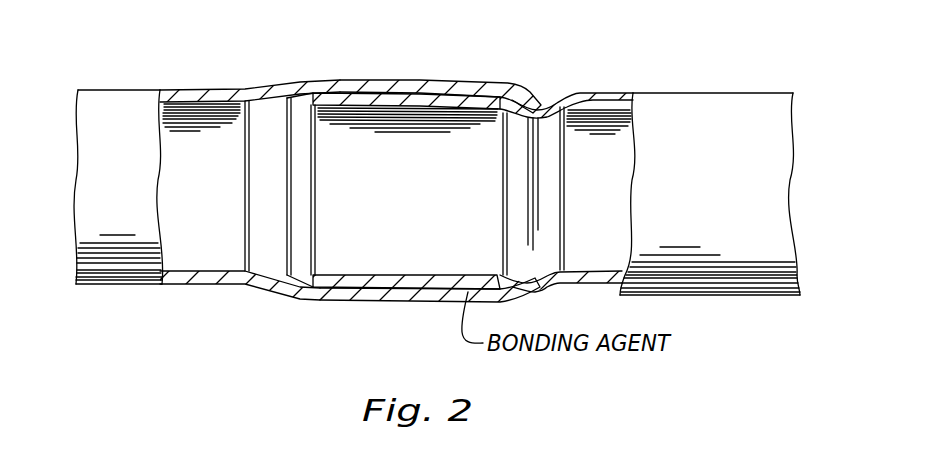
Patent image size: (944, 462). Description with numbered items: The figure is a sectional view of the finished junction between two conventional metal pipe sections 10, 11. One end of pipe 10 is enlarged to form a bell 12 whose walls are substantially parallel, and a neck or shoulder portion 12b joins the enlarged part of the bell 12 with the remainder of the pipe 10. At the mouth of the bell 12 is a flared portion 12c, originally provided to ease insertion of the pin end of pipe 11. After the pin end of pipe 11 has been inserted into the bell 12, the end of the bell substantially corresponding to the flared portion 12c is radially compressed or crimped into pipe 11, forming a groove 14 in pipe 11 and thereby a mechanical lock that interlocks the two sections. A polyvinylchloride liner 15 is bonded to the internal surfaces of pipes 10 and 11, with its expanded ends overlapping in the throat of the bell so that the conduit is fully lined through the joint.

The pipe section 10 is at (125, 92).
The pipe section 11 is at (617, 92).
The bell 12 is at (402, 83).
The neck or shoulder portion 12b is at (277, 92).
The flared portion 12c is at (520, 90).
The groove 14 is at (533, 98).
The PVC liner 15 is at (193, 98).